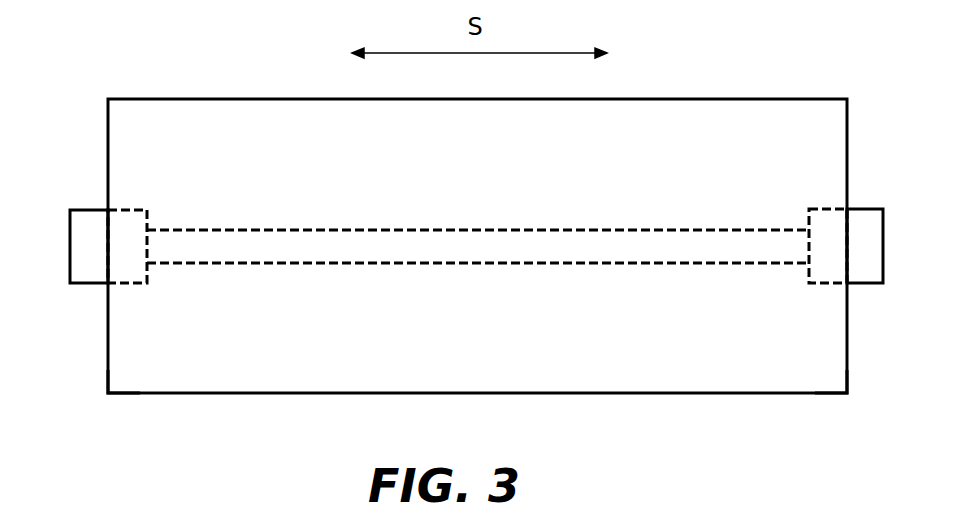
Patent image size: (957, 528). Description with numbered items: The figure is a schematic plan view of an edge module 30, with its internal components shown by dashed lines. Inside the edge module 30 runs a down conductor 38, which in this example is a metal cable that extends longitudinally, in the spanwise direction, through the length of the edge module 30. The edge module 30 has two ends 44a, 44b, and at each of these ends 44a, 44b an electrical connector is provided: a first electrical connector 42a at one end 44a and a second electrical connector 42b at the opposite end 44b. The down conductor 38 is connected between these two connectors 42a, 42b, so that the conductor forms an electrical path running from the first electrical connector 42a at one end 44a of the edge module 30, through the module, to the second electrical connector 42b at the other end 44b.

The edge module 30 is at (213, 72).
The down conductor 38 is at (518, 246).
The first electrical connector 42a is at (856, 272).
The second electrical connector 42b is at (88, 272).
The end of the edge module 44a is at (838, 408).
The end of the edge module 44b is at (114, 403).